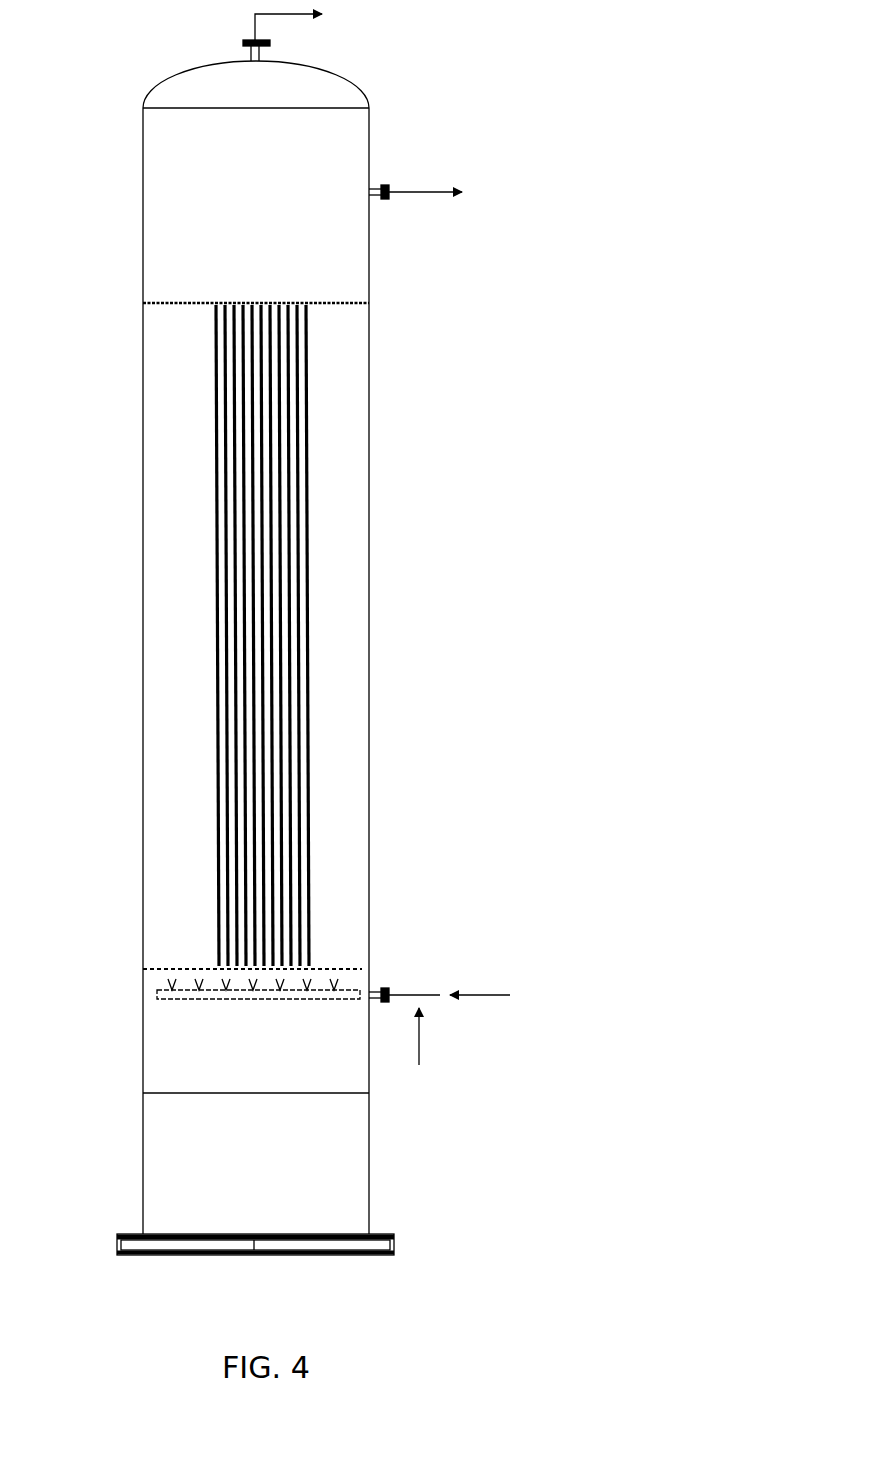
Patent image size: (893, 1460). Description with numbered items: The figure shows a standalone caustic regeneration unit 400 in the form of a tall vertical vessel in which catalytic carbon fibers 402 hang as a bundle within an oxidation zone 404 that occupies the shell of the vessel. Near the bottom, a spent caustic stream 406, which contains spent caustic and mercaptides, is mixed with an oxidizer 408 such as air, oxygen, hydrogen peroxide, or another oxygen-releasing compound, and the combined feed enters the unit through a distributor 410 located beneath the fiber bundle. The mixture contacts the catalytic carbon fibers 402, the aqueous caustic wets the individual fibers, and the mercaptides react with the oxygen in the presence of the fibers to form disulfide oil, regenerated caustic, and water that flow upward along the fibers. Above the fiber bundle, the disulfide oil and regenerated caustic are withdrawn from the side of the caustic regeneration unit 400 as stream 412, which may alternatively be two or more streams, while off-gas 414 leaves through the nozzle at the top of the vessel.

The caustic regeneration unit 400 is at (436, 776).
The catalytic carbon fibers 402 is at (302, 413).
The oxidation zone 404 is at (370, 622).
The spent caustic stream 406 is at (490, 995).
The oxidizer 408 is at (421, 1041).
The distributor 410 is at (200, 998).
The stream 412 is at (413, 197).
The off-gas 414 is at (310, 18).